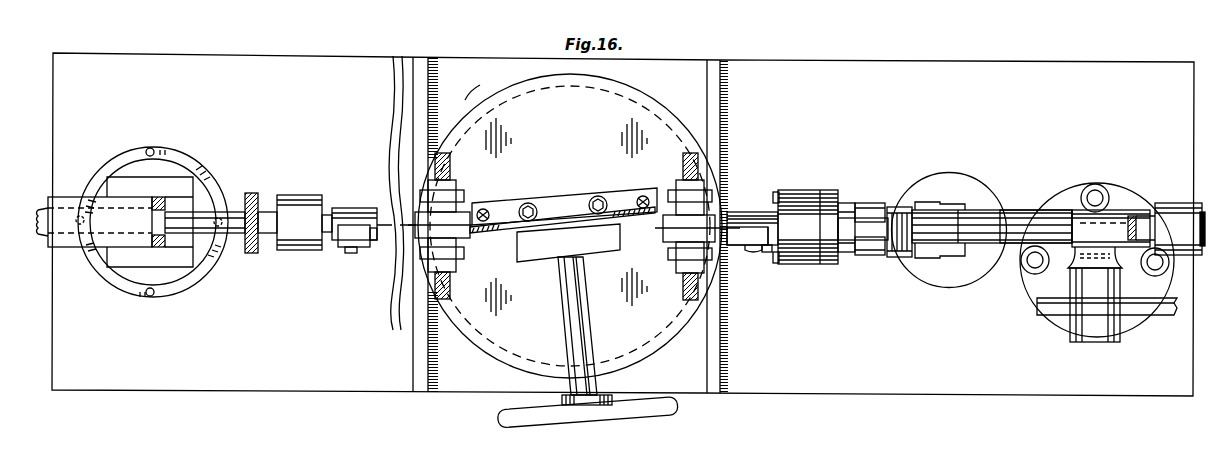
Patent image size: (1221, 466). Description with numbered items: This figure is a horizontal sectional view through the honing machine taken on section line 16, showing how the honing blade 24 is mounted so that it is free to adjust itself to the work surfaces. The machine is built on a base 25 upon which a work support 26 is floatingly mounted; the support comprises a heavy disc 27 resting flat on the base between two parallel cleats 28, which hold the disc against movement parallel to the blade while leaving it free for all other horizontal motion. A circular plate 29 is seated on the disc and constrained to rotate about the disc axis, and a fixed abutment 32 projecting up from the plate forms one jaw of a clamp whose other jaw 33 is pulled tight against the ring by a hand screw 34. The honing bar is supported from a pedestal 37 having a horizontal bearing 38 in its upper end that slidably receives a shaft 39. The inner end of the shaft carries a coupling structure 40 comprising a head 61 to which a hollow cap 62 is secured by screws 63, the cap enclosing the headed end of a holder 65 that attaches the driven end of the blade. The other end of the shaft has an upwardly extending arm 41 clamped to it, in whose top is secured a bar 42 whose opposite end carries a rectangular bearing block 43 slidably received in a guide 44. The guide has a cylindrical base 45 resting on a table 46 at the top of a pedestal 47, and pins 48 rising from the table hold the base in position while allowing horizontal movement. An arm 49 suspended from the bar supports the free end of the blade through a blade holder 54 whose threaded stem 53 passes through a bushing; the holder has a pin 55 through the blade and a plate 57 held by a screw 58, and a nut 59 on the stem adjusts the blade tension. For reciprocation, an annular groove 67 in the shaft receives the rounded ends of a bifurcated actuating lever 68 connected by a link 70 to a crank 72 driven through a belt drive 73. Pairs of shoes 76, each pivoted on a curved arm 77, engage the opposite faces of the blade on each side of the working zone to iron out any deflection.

The section line 16 is at (628, 206).
The honing blade 24 is at (505, 212).
The base 25 is at (292, 392).
The work support 26 is at (674, 96).
The heavy disc 27 is at (673, 122).
The cleats 28 is at (425, 60).
The circular plate 29 is at (490, 96).
The fixed abutment 32 is at (585, 199).
The jaw 33 is at (538, 254).
The hand screw 34 is at (584, 292).
The pedestal 37 is at (1052, 268).
The horizontal bearing 38 is at (1128, 204).
The shaft 39 is at (1000, 222).
The coupling structure 40 is at (872, 186).
The arm 41 is at (1175, 208).
The bar 42 is at (208, 205).
The rectangular bearing block 43 is at (72, 191).
The guide 44 is at (190, 179).
The cylindrical base 45 is at (165, 167).
The table 46 is at (112, 155).
The pedestal 47 is at (250, 195).
The pins 48 is at (150, 148).
The arm 49 is at (303, 209).
The threaded stem 53 is at (334, 208).
The blade holder 54 is at (360, 207).
The pin 55 is at (352, 252).
The plate 57 is at (375, 250).
The screw 58 is at (340, 248).
The nut 59 is at (252, 254).
The head 61 is at (826, 190).
The hollow cap 62 is at (800, 190).
The screws 63 is at (776, 190).
The holder 65 is at (758, 210).
The annular groove 67 is at (884, 206).
The bifurcated actuating lever 68 is at (878, 200).
The link 70 is at (1024, 206).
The crank 72 is at (1022, 266).
The belt drive 73 is at (1168, 318).
The shoes 76 is at (462, 218).
The curved arm 77 is at (450, 168).